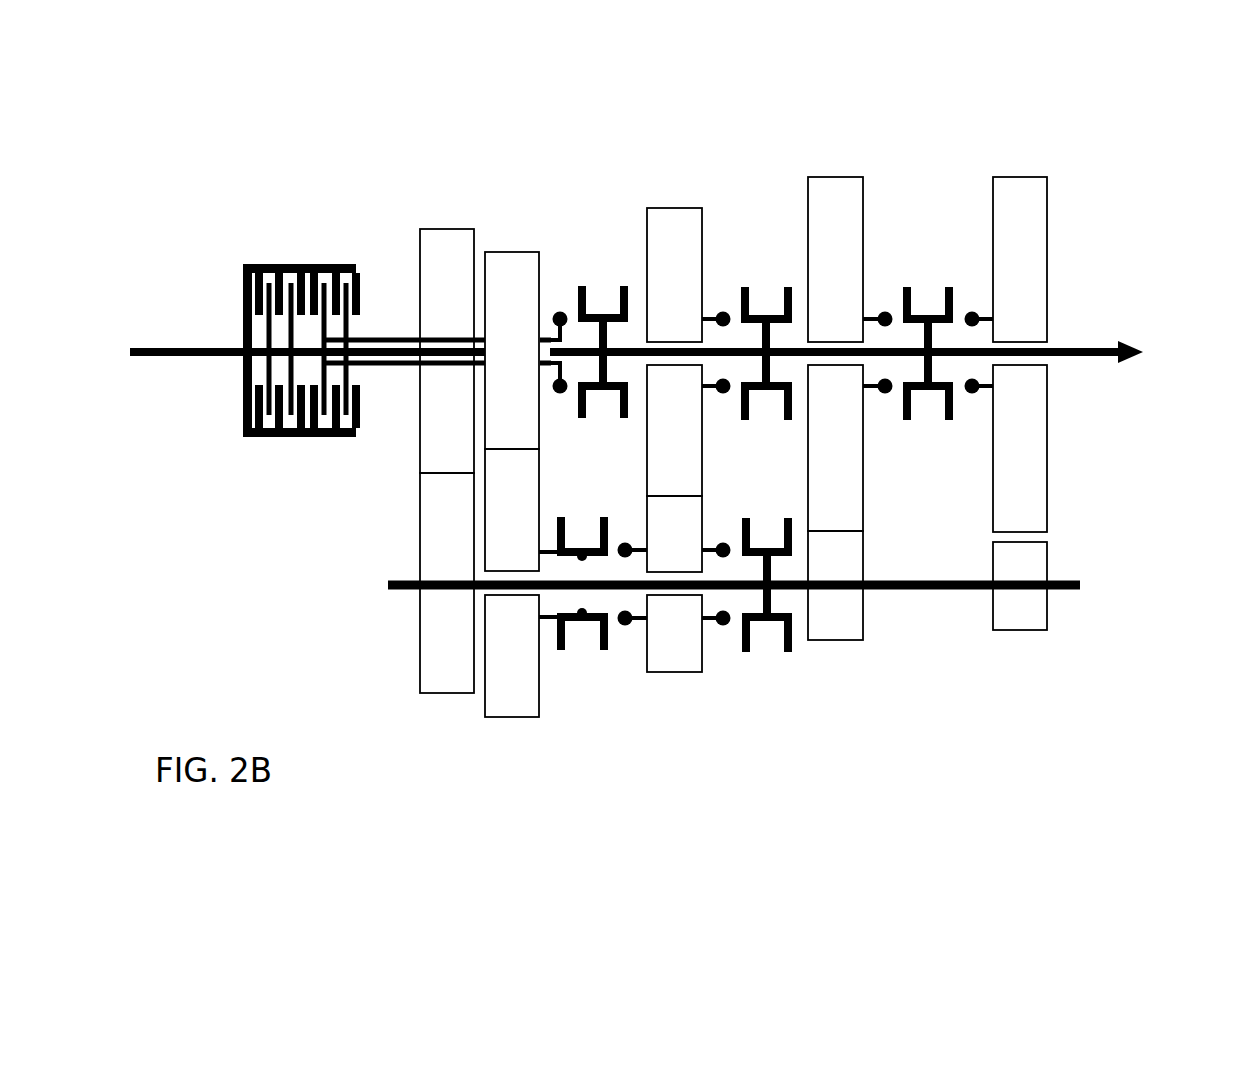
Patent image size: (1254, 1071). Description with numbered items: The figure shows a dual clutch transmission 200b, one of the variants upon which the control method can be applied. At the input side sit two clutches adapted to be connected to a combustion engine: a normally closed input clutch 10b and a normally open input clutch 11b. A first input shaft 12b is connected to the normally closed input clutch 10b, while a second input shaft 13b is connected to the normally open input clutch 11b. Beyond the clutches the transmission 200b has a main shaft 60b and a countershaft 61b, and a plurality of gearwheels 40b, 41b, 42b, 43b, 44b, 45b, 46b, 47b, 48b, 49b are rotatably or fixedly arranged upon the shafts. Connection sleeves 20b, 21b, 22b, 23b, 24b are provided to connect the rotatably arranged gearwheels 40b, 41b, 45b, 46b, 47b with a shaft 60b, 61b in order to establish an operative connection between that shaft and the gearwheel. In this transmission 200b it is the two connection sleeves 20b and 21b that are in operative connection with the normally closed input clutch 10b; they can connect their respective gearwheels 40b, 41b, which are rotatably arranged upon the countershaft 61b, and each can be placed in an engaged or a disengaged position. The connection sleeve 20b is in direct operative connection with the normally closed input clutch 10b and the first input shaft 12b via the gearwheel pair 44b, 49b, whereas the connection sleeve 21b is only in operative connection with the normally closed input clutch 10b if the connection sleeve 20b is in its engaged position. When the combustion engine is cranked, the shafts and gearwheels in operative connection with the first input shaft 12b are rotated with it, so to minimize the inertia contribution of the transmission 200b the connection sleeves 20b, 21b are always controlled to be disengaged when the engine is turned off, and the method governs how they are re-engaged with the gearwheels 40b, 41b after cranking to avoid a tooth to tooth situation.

The dual clutch transmission 200b is at (1142, 107).
The normally closed input clutch 10b is at (322, 273).
The normally open input clutch 11b is at (265, 283).
The first input shaft 12b is at (368, 340).
The second input shaft 13b is at (393, 347).
The connection sleeve 20b is at (755, 652).
The connection sleeve 21b is at (605, 652).
The connection sleeve 22b is at (582, 283).
The connection sleeve 23b is at (745, 283).
The connection sleeve 24b is at (905, 287).
The gearwheel 40b is at (678, 672).
The gearwheel 41b is at (508, 718).
The gearwheel 42b is at (838, 640).
The gearwheel 43b is at (1017, 630).
The gearwheel 44b is at (442, 695).
The gearwheel 45b is at (1017, 177).
The gearwheel 46b is at (832, 177).
The gearwheel 47b is at (672, 208).
The gearwheel 48b is at (518, 252).
The gearwheel 49b is at (465, 228).
The main shaft 60b is at (1080, 360).
The countershaft 61b is at (1070, 593).